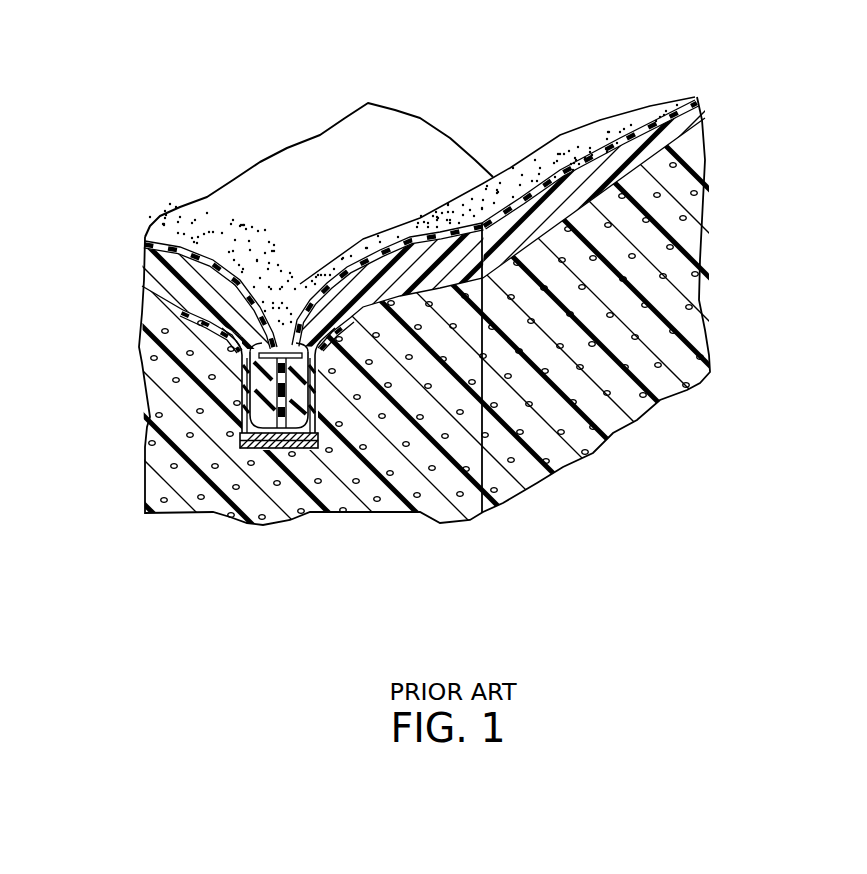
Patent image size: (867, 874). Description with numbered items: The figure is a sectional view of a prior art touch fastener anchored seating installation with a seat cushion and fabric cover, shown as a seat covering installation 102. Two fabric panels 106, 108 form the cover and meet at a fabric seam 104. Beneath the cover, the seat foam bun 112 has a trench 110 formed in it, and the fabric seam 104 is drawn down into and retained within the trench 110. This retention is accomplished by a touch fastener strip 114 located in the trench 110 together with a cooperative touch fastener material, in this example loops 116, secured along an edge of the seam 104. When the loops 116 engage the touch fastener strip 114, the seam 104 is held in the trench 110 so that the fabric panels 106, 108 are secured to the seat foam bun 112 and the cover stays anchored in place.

The seat covering installation 102 is at (540, 100).
The fabric seam 104 is at (277, 337).
The fabric panel 106 is at (352, 148).
The fabric panel 108 is at (650, 107).
The trench 110 is at (237, 407).
The seat foam bun 112 is at (455, 515).
The touch fastener strip 114 is at (257, 447).
The loops 116 is at (315, 447).